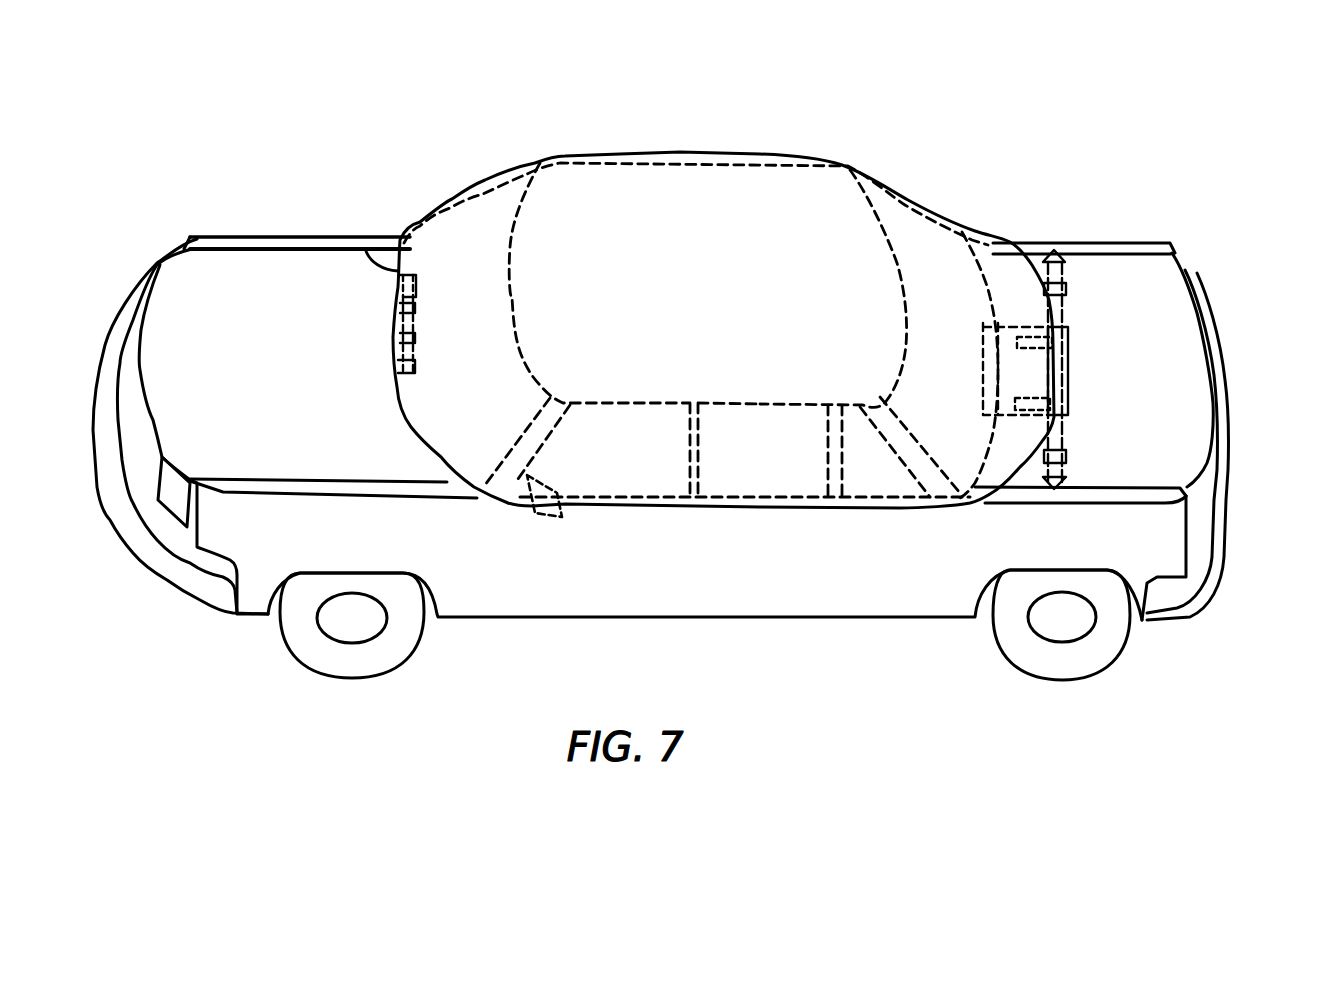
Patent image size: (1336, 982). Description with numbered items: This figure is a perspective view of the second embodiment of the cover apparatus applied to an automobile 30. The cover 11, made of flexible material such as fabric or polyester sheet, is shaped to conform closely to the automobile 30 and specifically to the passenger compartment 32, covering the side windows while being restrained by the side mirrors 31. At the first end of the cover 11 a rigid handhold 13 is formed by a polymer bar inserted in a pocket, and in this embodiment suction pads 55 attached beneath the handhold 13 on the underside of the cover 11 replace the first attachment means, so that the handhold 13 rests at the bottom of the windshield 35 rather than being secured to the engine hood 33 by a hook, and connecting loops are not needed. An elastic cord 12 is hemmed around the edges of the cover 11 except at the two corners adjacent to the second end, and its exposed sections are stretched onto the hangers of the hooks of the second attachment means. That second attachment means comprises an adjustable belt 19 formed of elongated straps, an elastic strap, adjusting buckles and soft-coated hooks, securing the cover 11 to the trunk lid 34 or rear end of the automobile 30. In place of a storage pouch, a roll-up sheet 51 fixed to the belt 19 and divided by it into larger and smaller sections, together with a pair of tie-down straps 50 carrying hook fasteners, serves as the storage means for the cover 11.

The cover 11 is at (673, 147).
The elastic cord 12 is at (1000, 238).
The handhold 13 is at (366, 236).
The belt 19 is at (1078, 431).
The automobile 30 is at (816, 628).
The side mirrors 31 is at (535, 517).
The passenger compartment 32 is at (760, 188).
The engine hood 33 is at (238, 249).
The trunk lid 34 is at (1134, 280).
The windshield 35 is at (481, 232).
The tie-down straps 50 is at (1027, 394).
The roll-up sheet 51 is at (1070, 338).
The suction pads 55 is at (395, 327).